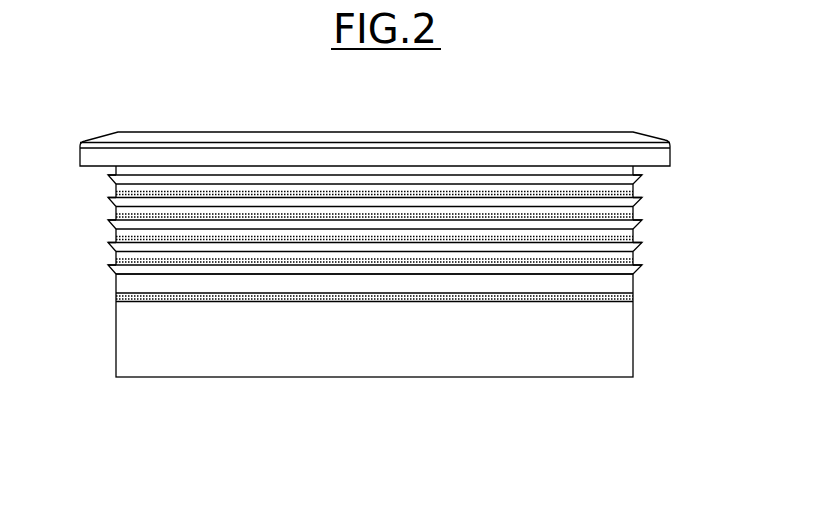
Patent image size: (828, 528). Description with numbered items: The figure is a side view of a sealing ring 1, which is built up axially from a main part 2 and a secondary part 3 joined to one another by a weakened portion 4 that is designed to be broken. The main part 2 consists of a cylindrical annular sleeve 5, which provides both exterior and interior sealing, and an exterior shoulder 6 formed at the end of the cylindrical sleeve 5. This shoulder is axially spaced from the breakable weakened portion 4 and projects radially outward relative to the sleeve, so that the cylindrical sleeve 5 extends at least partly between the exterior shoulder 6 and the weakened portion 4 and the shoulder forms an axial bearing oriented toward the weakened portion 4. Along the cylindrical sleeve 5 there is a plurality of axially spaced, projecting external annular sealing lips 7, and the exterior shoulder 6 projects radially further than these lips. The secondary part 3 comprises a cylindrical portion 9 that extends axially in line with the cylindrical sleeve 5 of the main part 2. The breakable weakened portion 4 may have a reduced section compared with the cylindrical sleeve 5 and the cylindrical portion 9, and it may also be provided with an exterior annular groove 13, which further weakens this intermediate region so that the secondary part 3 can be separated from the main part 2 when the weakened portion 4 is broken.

The sealing ring 1 is at (62, 128).
The main part 2 is at (366, 220).
The secondary part 3 is at (374, 325).
The weakened portion 4 is at (377, 299).
The cylindrical annular sleeve 5 is at (607, 240).
The exterior shoulder 6 is at (662, 157).
The external annular sealing lips 7 is at (638, 203).
The cylindrical portion 9 is at (620, 344).
The exterior annular groove 13 is at (634, 298).